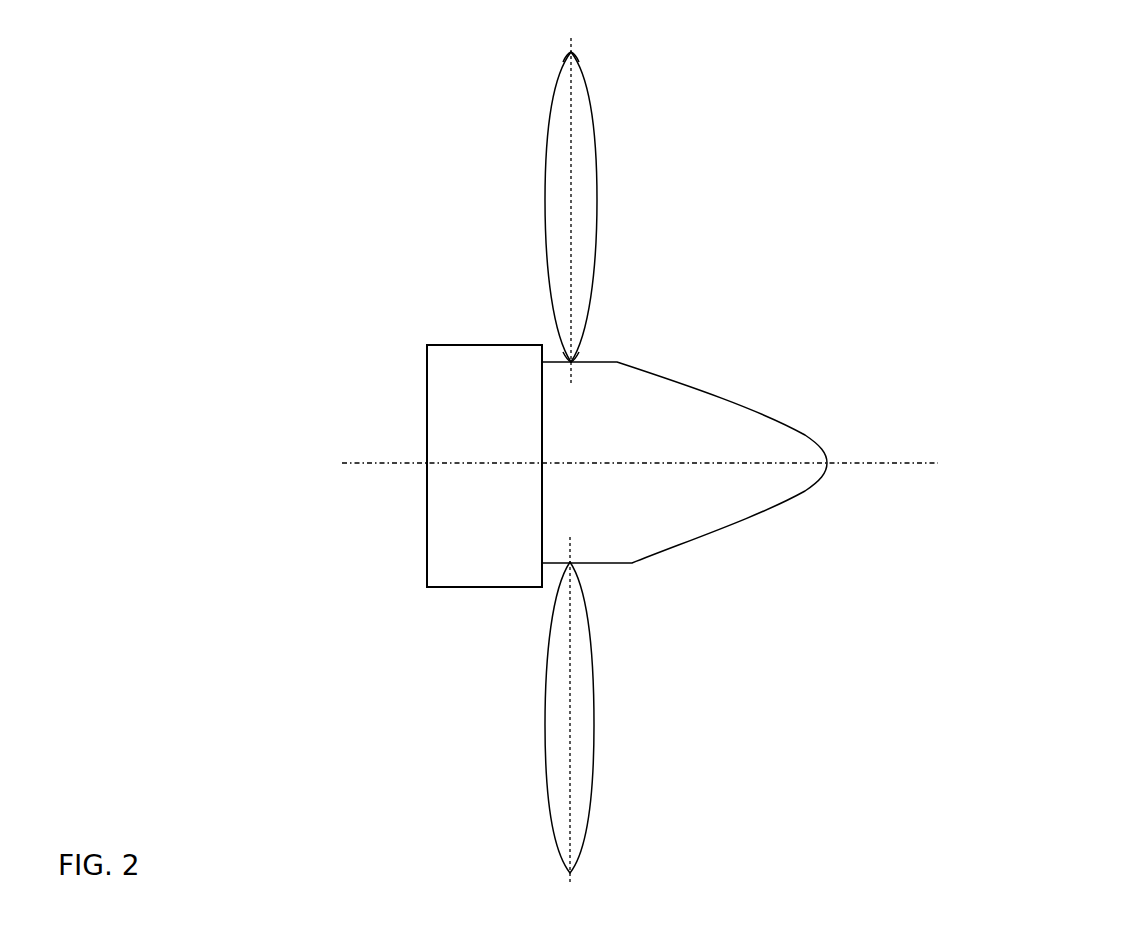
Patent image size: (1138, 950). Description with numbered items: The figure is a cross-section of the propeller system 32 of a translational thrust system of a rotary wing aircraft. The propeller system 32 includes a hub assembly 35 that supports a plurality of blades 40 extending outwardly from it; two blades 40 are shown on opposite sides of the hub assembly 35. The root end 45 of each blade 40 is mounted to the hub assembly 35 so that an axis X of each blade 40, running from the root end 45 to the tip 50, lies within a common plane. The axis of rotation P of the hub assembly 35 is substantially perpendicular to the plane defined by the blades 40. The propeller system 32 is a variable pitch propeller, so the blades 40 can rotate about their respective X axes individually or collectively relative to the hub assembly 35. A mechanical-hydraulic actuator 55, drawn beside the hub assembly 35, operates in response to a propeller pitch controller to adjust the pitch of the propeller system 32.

The propeller system 32 is at (985, 196).
The hub assembly 35 is at (772, 442).
The blade 40 is at (545, 217).
The root end 45 is at (577, 360).
The tip 50 is at (573, 55).
The mechanical-hydraulic actuator 55 is at (484, 466).